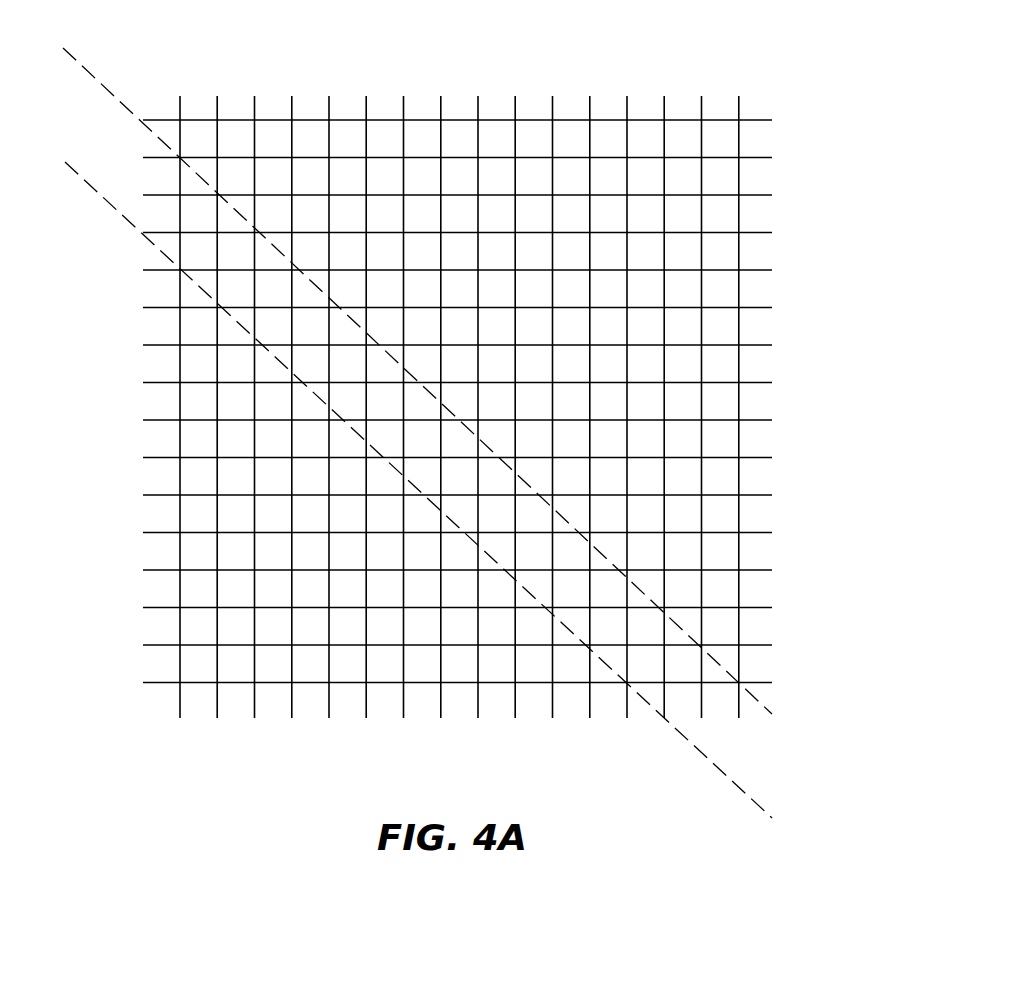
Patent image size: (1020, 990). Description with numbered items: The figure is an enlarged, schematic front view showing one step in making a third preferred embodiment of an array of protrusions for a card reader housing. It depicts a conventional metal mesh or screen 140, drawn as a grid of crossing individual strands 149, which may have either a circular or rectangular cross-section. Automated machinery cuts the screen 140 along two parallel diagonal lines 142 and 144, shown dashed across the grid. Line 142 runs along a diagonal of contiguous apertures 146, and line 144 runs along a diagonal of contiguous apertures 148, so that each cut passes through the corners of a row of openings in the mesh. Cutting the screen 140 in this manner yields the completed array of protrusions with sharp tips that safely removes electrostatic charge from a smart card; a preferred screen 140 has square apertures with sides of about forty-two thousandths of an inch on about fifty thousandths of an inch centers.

The metal mesh or screen 140 is at (812, 172).
The line 142 is at (103, 78).
The line 144 is at (95, 192).
The contiguous apertures 146 is at (500, 443).
The contiguous apertures 148 is at (437, 520).
The individual strands 149 is at (478, 108).